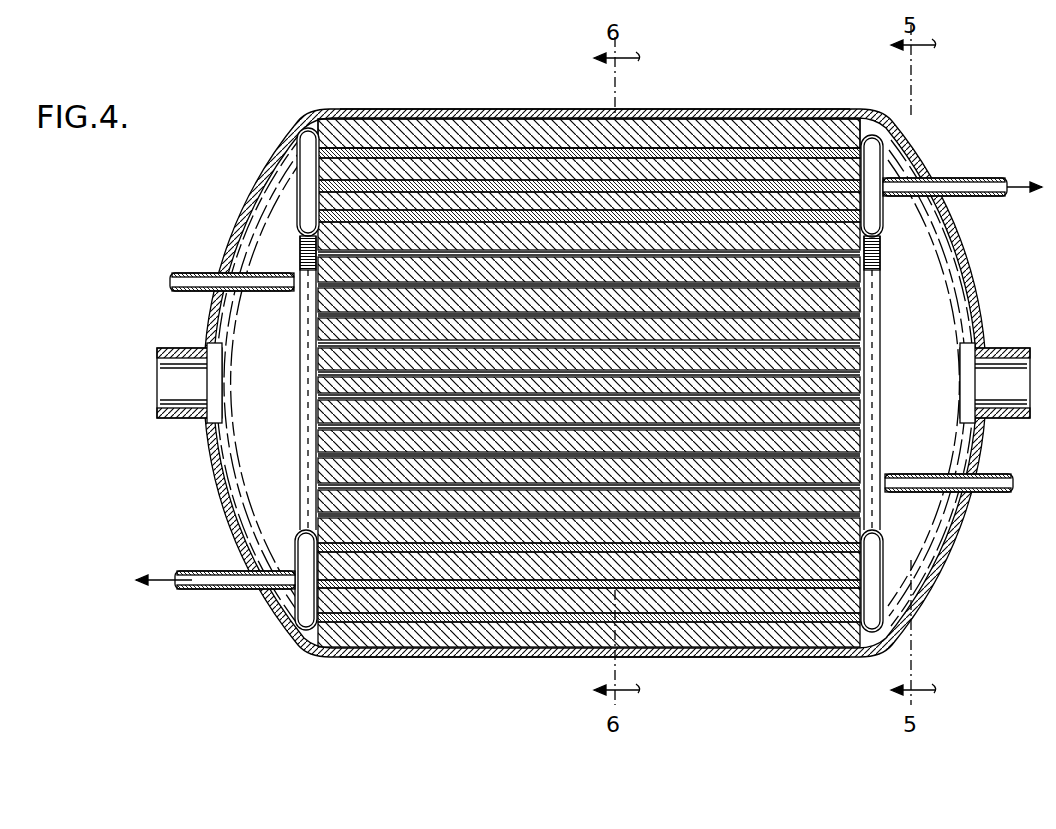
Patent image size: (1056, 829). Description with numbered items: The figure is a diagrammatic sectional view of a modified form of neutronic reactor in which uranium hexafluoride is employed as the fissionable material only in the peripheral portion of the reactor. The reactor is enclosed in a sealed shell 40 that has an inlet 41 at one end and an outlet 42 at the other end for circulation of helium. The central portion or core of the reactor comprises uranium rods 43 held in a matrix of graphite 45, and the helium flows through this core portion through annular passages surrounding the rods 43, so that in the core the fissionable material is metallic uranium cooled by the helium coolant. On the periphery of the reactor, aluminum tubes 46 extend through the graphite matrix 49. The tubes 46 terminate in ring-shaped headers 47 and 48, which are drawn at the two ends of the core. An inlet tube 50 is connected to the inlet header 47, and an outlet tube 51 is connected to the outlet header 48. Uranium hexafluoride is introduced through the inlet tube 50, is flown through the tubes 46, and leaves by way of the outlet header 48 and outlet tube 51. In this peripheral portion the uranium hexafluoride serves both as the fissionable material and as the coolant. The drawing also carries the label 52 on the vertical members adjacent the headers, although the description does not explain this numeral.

The sealed shell 40 is at (922, 596).
The inlet 41 is at (1000, 351).
The outlet 42 is at (163, 350).
The uranium rods 43 is at (848, 325).
The graphite matrix 45 is at (852, 410).
The aluminum tubes 46 is at (750, 156).
The inlet header 47 is at (890, 100).
The outlet header 48 is at (266, 152).
The graphite matrix 49 is at (712, 117).
The inlet tube 50 is at (966, 180).
The outlet tube 51 is at (188, 272).
The vertical tubes 52 is at (858, 303).